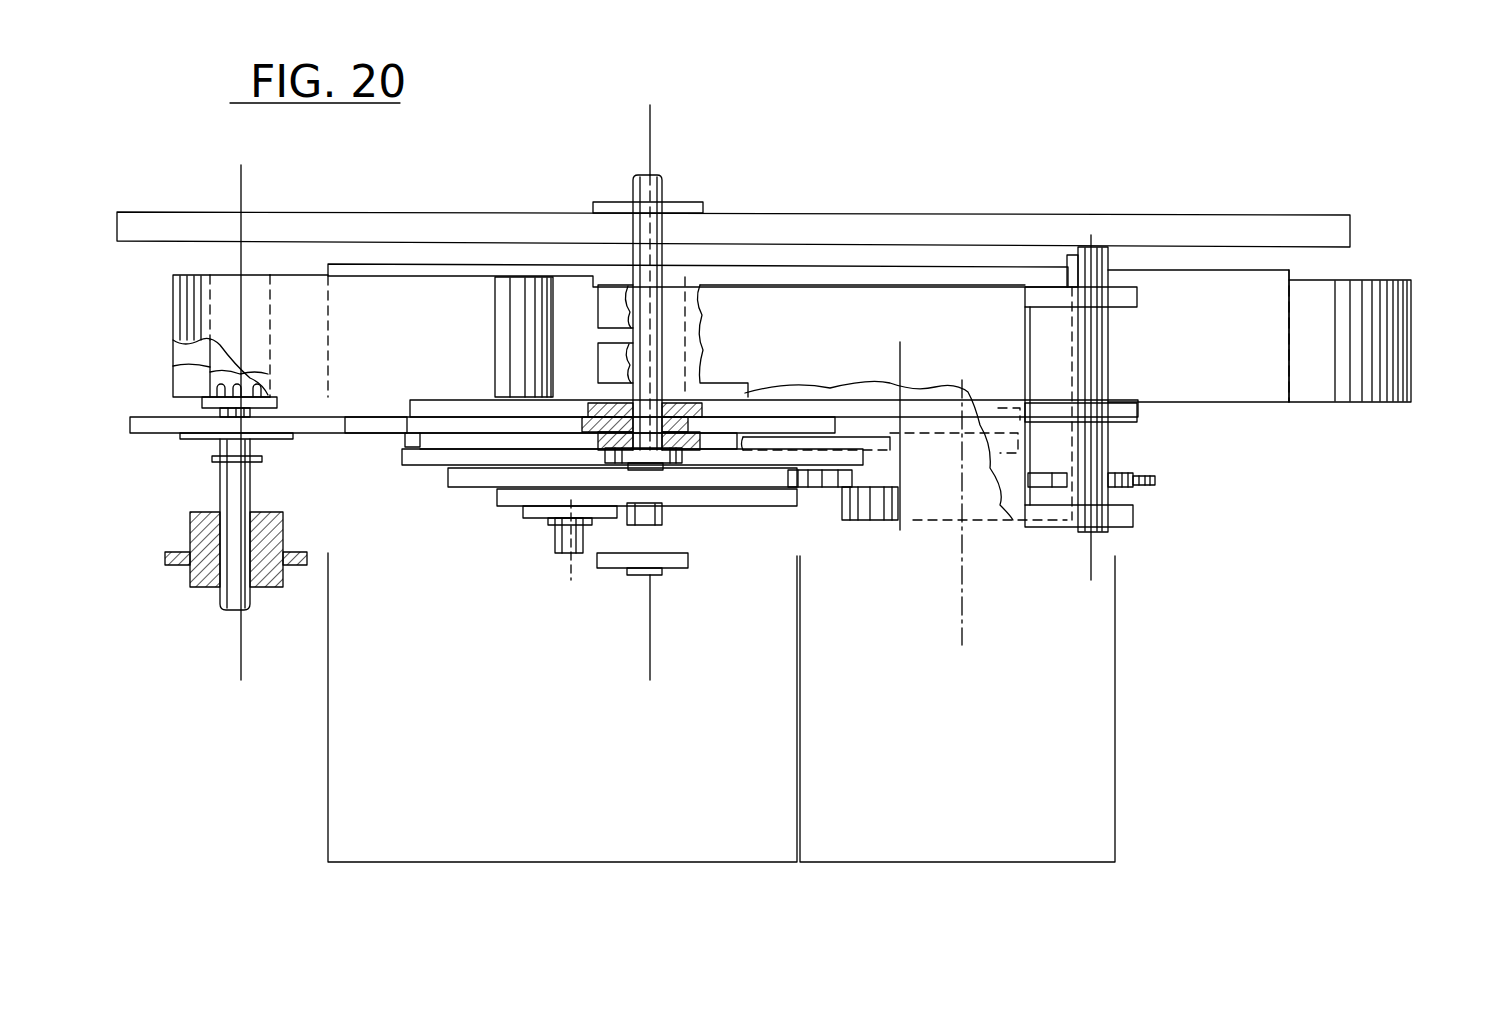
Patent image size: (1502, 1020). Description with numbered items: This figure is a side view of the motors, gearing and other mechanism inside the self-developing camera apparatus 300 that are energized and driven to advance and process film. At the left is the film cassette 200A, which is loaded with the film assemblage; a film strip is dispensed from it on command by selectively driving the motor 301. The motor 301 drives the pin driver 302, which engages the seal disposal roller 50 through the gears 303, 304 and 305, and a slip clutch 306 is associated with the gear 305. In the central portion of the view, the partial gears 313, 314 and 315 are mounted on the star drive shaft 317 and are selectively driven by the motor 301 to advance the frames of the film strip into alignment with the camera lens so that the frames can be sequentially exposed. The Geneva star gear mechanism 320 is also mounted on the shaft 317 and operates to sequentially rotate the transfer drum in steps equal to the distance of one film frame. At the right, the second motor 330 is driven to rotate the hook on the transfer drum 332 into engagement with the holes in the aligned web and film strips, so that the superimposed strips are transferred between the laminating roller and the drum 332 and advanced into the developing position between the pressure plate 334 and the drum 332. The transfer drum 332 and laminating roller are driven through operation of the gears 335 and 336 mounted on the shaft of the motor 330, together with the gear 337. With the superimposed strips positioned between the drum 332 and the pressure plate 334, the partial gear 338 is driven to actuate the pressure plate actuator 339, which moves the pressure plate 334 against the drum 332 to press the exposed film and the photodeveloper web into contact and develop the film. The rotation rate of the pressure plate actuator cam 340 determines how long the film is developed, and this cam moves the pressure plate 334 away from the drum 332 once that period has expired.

The camera apparatus 300 is at (430, 203).
The film cassette 200A is at (193, 272).
The seal disposal roller 50 is at (185, 377).
The motor 301 is at (562, 483).
The pin driver 302 is at (202, 404).
The gear 303 is at (480, 407).
The gear 304 is at (358, 425).
The gear 305 is at (130, 424).
The slip clutch 306 is at (262, 447).
The partial gear 313 is at (468, 372).
The partial gear 314 is at (410, 440).
The partial gear 315 is at (408, 458).
The star drive shaft 317 is at (658, 516).
The Geneva star gear mechanism 320 is at (456, 482).
The motor 330 is at (957, 548).
The transfer drum 332 is at (1412, 352).
The pressure plate 334 is at (1262, 393).
The gear 335 is at (928, 455).
The gear 336 is at (1155, 482).
The gear 337 is at (805, 455).
The partial gear 338 is at (1120, 445).
The pressure plate actuator 339 is at (930, 285).
The pressure plate actuator cam 340 is at (920, 513).